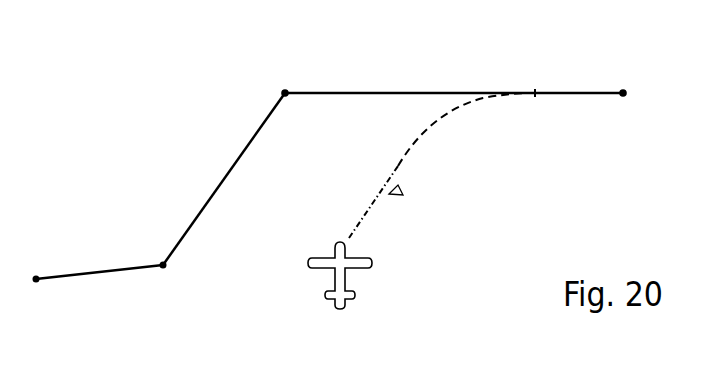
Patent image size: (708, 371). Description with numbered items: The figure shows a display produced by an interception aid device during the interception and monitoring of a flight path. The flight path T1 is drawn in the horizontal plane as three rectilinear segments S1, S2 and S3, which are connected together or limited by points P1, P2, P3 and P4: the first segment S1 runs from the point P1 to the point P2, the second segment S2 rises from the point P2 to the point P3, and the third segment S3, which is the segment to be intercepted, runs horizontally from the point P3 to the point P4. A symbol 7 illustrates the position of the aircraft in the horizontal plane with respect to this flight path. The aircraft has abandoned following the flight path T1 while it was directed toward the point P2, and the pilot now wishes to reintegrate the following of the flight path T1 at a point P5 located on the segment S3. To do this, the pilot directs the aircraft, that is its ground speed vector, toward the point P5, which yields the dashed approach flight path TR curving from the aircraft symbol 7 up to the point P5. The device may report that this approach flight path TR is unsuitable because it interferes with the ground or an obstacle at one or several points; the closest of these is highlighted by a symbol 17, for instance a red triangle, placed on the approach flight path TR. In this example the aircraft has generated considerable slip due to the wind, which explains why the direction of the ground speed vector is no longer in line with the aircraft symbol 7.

The flight path T1 is at (112, 146).
The rectilinear segment S1 is at (89, 272).
The rectilinear segment S2 is at (235, 164).
The segment to be intercepted S3 is at (404, 92).
The point P1 is at (36, 282).
The point P2 is at (163, 268).
The point P3 is at (285, 90).
The point P4 is at (627, 95).
The point P5 is at (535, 93).
The approach flight path TR is at (378, 170).
The symbol 17 is at (400, 191).
The symbol illustrating the position of the aircraft 7 is at (348, 277).